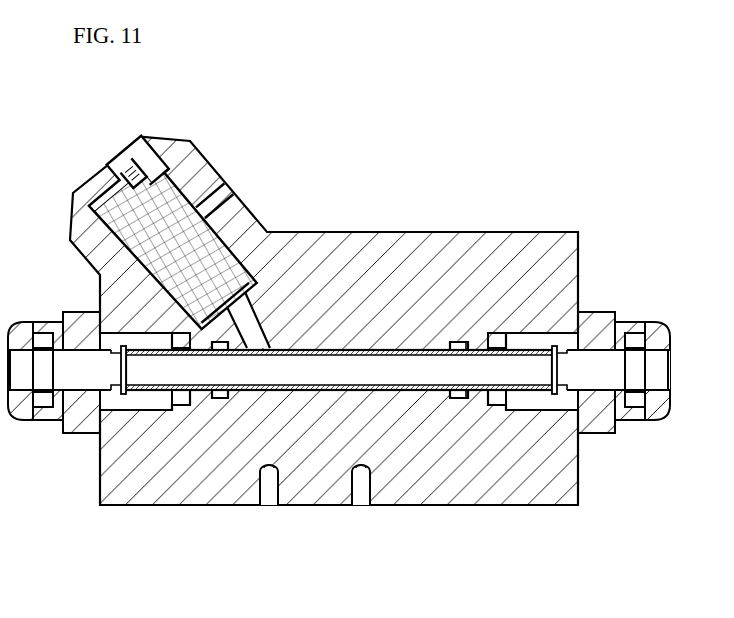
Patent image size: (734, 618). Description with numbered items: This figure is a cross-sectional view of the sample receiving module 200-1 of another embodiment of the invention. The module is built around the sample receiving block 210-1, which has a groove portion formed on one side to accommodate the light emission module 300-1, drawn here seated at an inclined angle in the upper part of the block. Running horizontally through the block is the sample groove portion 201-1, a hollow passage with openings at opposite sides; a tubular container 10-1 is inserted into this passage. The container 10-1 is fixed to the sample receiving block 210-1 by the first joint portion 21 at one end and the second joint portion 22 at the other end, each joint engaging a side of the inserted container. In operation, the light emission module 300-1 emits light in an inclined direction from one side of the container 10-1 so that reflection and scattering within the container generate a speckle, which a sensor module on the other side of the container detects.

The sample receiving module 200-1 is at (499, 153).
The sample receiving block 210-1 is at (204, 486).
The sample groove portion 201-1 is at (407, 373).
The container 10-1 is at (523, 387).
The light emission module 300-1 is at (168, 204).
The first joint portion 21 is at (600, 411).
The second joint portion 22 is at (83, 420).